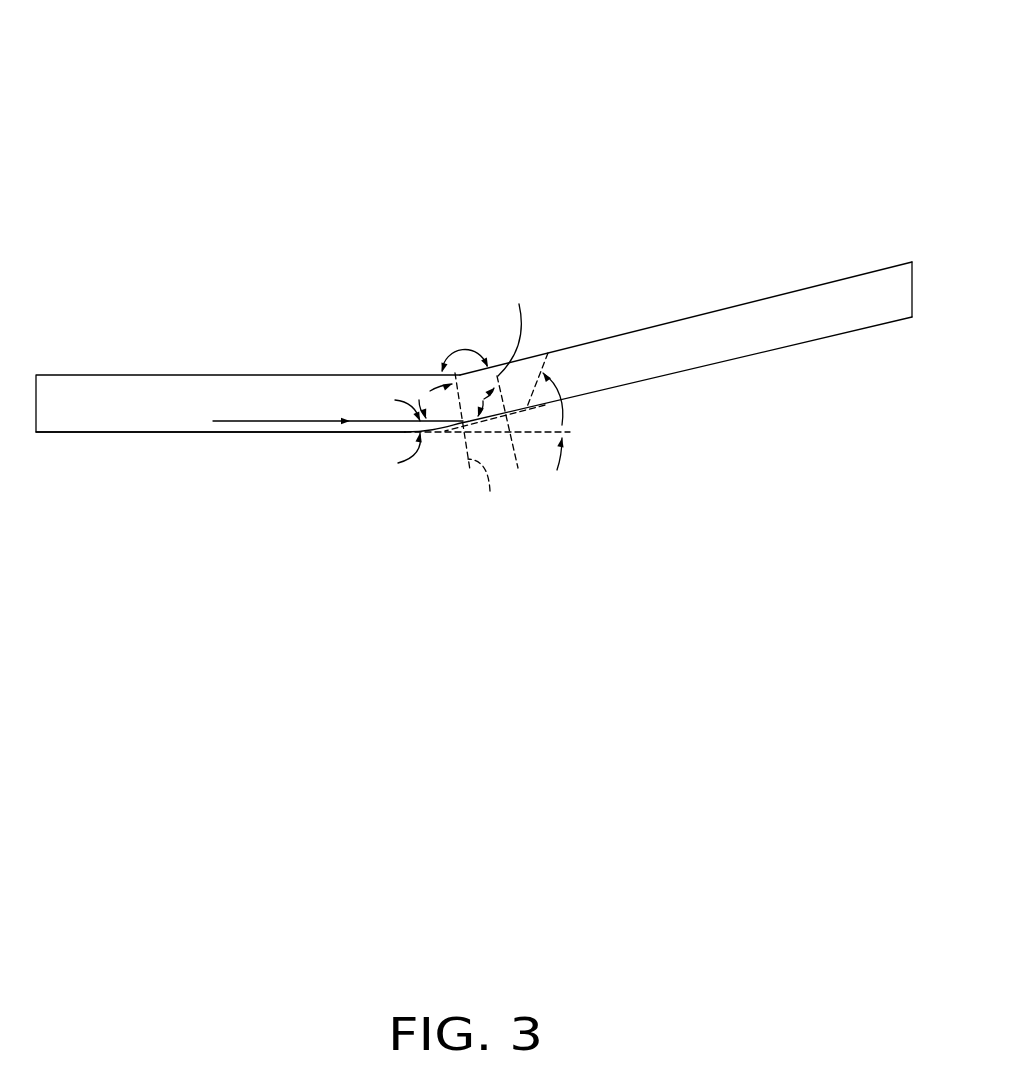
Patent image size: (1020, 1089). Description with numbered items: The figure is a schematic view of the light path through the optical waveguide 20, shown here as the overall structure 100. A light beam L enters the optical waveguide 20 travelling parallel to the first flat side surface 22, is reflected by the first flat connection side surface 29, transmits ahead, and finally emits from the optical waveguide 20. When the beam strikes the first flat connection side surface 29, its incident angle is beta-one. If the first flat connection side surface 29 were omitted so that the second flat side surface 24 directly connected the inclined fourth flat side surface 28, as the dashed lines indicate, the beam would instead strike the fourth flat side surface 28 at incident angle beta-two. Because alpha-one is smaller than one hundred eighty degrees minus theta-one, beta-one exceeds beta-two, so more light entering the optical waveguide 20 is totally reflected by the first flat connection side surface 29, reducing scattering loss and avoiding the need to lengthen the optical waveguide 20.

The bent sheet metal structure 100 is at (406, 72).
The optical waveguide 20 is at (867, 287).
The first flat side surface 22 is at (220, 375).
The second flat side surface 24 is at (185, 433).
The fourth flat side surface 28 is at (685, 377).
The first flat connection side surface 29 is at (548, 353).